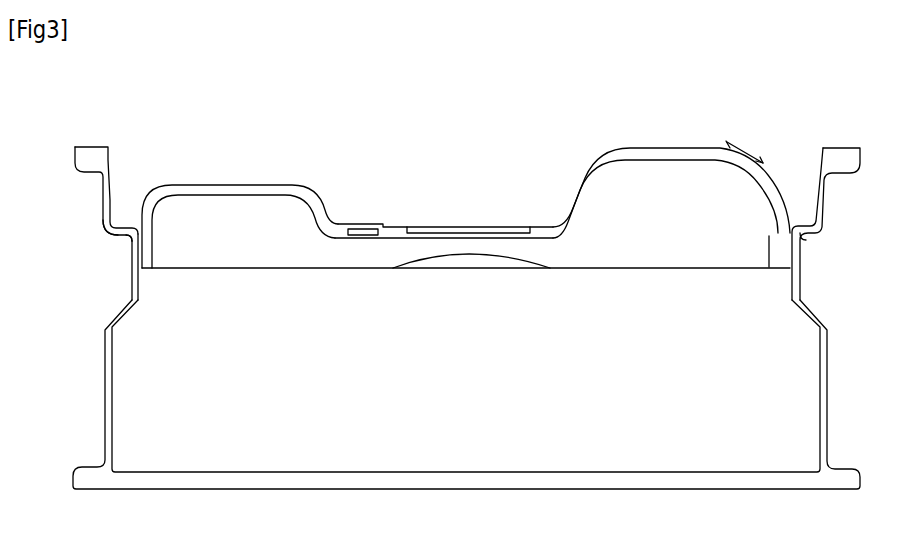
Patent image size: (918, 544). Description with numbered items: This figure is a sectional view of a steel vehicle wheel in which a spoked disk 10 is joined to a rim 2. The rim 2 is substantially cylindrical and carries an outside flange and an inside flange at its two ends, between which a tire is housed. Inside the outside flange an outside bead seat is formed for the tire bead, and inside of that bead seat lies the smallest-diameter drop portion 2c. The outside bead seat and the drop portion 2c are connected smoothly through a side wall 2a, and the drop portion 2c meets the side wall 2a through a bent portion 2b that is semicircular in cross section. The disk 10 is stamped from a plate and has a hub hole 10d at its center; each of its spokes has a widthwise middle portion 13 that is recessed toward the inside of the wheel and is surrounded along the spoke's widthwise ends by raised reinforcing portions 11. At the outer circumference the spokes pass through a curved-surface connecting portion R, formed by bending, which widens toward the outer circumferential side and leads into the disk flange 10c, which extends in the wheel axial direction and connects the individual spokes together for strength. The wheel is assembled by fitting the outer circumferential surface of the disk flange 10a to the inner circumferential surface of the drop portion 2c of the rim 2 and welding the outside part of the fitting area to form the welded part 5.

The rim 2 is at (62, 157).
The side wall 2a is at (113, 233).
The bent portion 2b is at (118, 241).
The drop portion 2c is at (128, 239).
The welded part 5 is at (804, 215).
The disk 10 is at (419, 166).
The disk flange 10a is at (577, 253).
The disk flange 10c is at (745, 249).
The hub hole 10d is at (495, 196).
The reinforcing portion 11 is at (675, 148).
The widthwise middle portion 13 is at (248, 184).
The curved-surface connecting portion R is at (754, 143).